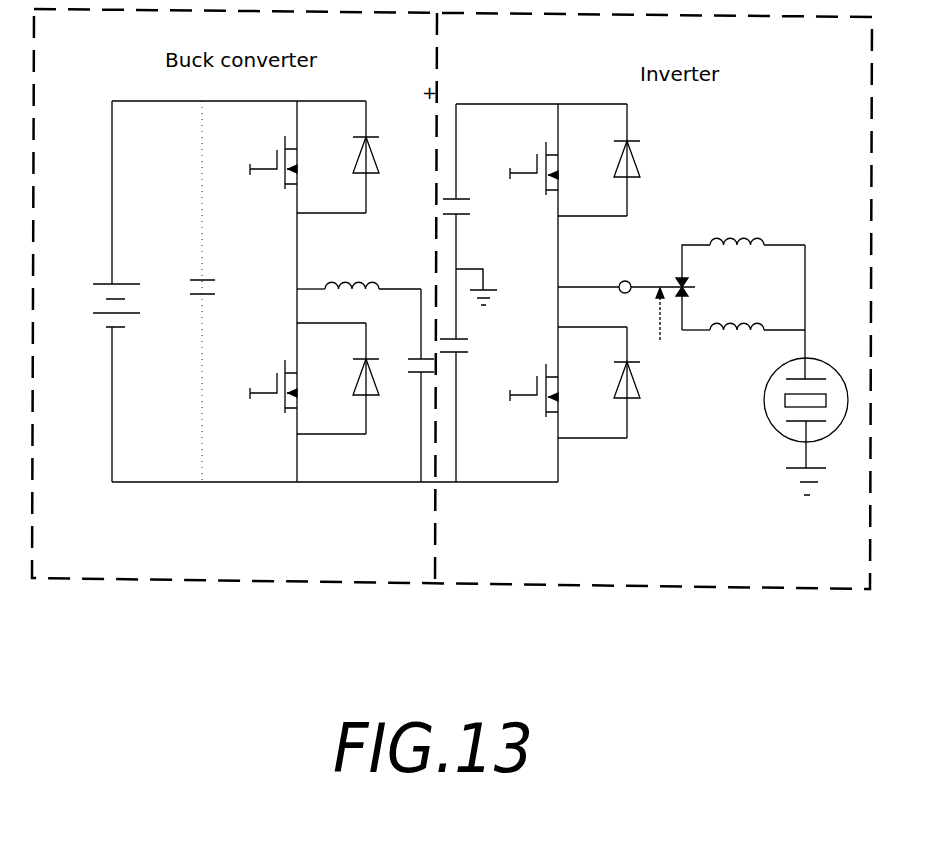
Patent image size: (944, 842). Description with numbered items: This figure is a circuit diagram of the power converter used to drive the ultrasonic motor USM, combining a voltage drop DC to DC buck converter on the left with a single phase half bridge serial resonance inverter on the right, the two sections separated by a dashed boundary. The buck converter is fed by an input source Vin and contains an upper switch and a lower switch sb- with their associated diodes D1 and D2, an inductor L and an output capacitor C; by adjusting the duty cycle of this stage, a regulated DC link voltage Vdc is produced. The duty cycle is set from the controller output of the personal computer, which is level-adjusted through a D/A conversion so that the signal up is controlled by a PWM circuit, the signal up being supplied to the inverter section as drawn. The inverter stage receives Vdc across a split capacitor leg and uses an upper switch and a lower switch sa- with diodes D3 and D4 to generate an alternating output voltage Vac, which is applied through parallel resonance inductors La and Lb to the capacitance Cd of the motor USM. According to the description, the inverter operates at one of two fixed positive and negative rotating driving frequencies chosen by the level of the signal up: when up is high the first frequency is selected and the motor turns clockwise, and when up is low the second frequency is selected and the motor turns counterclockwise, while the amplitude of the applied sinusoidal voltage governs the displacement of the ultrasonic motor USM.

The input voltage source Vin is at (98, 291).
The buck converter lower switch sb- is at (254, 385).
The buck upper diode D1 is at (338, 157).
The buck lower diode D2 is at (338, 378).
The buck inductor L is at (359, 267).
The buck capacitor C is at (417, 385).
The DC link voltage Vdc is at (419, 254).
The inverter lower switch sa- is at (514, 384).
The inverter upper diode D3 is at (599, 160).
The inverter lower diode D4 is at (599, 382).
The AC output voltage Vac is at (626, 338).
The signal up is at (701, 329).
The inductor La is at (743, 263).
The inductor Lb is at (743, 307).
The damping capacitor / motor capacitance Cd is at (842, 356).
The ultrasonic motor USM is at (786, 370).